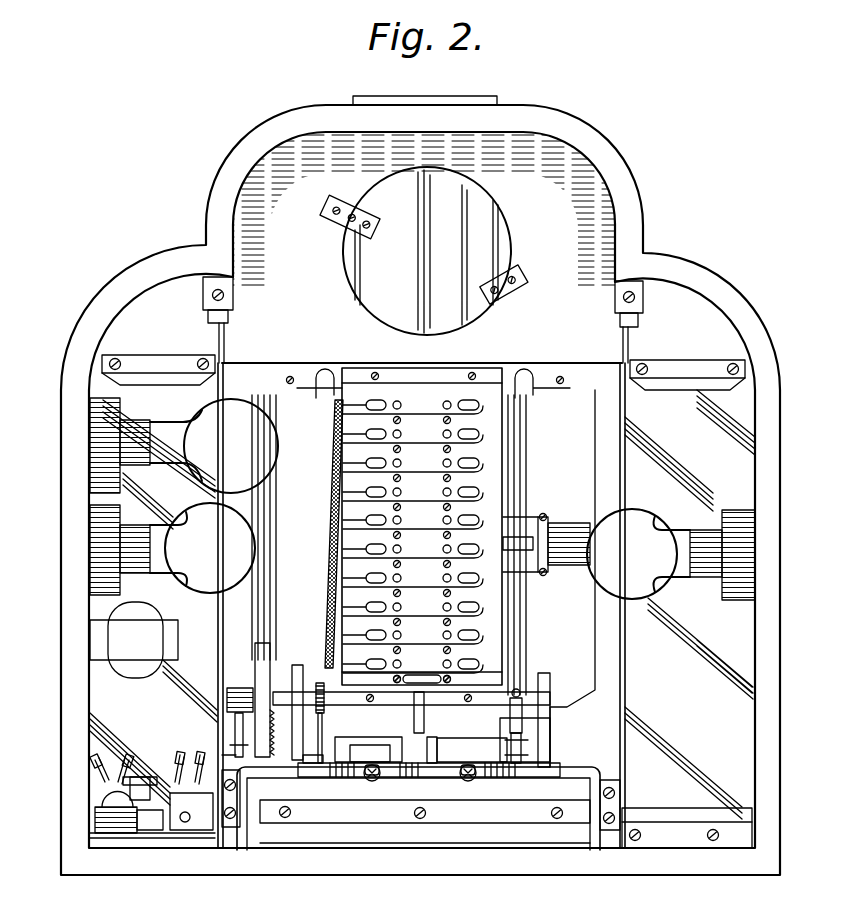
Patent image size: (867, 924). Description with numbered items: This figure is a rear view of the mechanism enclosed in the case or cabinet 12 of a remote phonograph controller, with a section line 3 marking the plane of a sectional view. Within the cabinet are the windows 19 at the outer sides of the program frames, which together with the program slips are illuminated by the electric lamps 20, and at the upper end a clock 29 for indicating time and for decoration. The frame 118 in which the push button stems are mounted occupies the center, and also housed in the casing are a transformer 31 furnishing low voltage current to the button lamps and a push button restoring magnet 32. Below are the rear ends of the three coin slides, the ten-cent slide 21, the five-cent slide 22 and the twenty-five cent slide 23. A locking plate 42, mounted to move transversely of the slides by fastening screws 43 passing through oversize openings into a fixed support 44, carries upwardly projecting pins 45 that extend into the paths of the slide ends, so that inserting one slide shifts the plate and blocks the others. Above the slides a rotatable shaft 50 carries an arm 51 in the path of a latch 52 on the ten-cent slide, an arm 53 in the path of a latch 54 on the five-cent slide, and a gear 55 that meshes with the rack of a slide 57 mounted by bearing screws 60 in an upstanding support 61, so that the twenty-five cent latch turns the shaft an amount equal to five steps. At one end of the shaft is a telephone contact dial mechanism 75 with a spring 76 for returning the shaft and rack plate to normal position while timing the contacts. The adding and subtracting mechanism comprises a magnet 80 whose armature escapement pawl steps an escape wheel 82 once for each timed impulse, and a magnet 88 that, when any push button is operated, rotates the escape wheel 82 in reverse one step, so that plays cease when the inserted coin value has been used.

The section line 3- 3 is at (105, 678).
The case or cabinet 12 is at (645, 226).
The window 19 is at (103, 368).
The electric lamp 20 is at (247, 462).
The ten-cent coin slide 21 is at (505, 752).
The five-cent coin slide 22 is at (440, 736).
The twenty-five cent coin slide 23 is at (312, 763).
The clock 29 is at (483, 212).
The transformer 31 is at (140, 647).
The push button restoring magnet 32 is at (570, 535).
The locking plate 42 is at (323, 778).
The fastening screw 43 is at (370, 782).
The fixed support 44 is at (567, 772).
The locking pin 45 is at (338, 763).
The rotatable shaft 50 is at (528, 698).
The arm 51 is at (521, 715).
The latch 52 is at (520, 762).
The arm 53 is at (426, 716).
The latch 54 is at (387, 765).
The gear 55 is at (320, 690).
The rack slide 57 is at (328, 722).
The bearing screw 60 is at (312, 727).
The upstanding support 61 is at (318, 683).
The telephone contact dial mechanism 75 is at (262, 648).
The spring 76 is at (240, 688).
The magnet 80 is at (110, 832).
The escape wheel 82 is at (157, 826).
The magnet 88 is at (195, 832).
The frame 118 is at (494, 433).